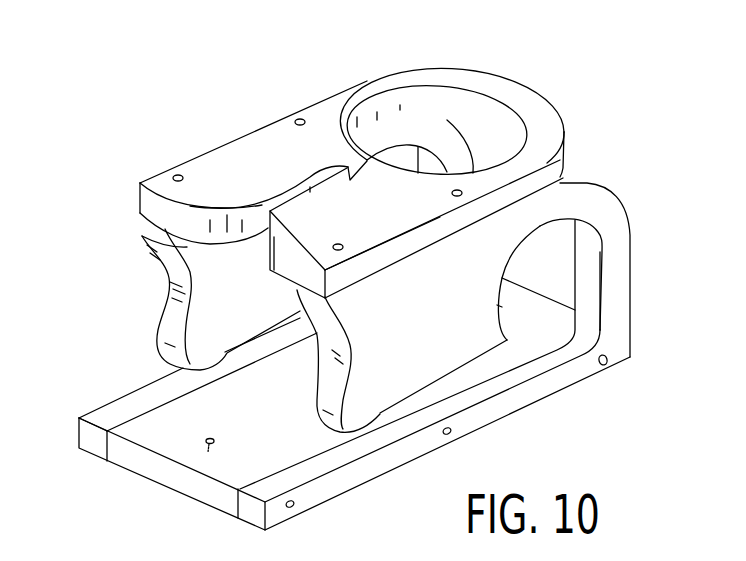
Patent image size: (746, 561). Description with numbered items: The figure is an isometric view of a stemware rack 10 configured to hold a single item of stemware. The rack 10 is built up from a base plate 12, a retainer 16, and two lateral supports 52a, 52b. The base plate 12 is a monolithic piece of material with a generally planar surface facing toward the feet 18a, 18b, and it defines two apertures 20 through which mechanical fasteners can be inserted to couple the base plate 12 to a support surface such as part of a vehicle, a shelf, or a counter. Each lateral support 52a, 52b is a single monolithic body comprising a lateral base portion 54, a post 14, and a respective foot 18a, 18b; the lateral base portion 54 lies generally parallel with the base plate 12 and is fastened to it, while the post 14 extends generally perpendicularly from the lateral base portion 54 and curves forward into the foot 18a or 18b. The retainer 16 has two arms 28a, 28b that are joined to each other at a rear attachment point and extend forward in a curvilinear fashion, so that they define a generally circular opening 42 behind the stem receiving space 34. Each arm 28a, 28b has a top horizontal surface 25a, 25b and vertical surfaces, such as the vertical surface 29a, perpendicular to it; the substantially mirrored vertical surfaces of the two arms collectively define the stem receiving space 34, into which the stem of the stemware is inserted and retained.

The stemware rack 10 is at (158, 102).
The base plate 12 is at (258, 424).
The post 14 is at (625, 278).
The retainer 16 is at (553, 100).
The foot 18a is at (253, 303).
The foot 18b is at (443, 338).
The aperture 20 is at (205, 447).
The top horizontal surface 25a is at (218, 175).
The top horizontal surface 25b is at (357, 237).
The arm 28a is at (277, 121).
The arm 28b is at (377, 231).
The vertical surface 29a is at (152, 241).
The stem receiving space 34 is at (263, 198).
The circular opening 42 is at (476, 127).
The lateral support 52a is at (107, 413).
The lateral support 52b is at (535, 400).
The lateral base portion 54 is at (138, 400).